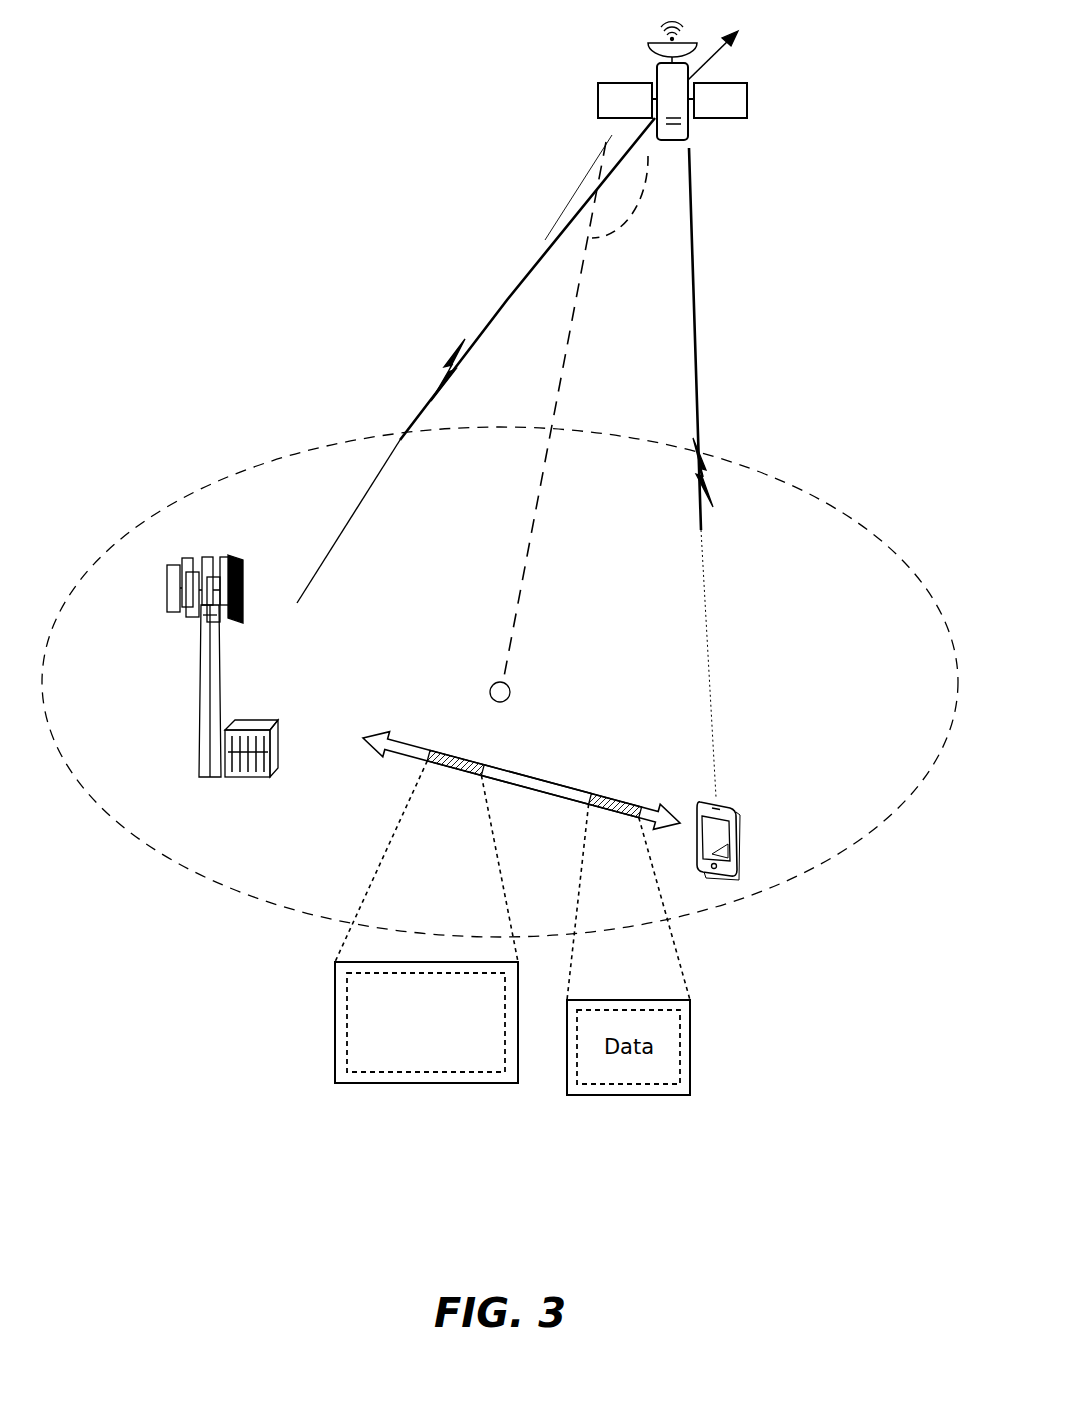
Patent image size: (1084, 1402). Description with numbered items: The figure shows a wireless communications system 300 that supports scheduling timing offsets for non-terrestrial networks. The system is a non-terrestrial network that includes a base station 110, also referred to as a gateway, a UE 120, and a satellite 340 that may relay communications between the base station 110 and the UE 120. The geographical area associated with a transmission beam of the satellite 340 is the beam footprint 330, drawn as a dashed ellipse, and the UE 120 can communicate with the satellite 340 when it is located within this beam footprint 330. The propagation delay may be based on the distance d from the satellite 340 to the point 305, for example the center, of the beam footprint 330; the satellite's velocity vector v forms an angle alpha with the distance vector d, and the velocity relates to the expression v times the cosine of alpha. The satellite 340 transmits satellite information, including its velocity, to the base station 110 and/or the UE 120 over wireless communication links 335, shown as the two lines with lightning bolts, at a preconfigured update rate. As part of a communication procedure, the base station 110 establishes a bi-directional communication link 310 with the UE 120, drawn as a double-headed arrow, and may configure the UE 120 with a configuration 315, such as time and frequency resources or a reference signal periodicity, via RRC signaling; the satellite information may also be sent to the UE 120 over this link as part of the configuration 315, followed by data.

The wireless communications system 300 is at (318, 170).
The satellite 340 is at (743, 118).
The wireless communication links 335 is at (452, 357).
The base station 110 is at (270, 795).
The UE 120 is at (715, 878).
The beam footprint 330 is at (190, 868).
The point 305 is at (492, 703).
The bi-directional communication link 310 is at (510, 787).
The configuration 315 is at (426, 922).